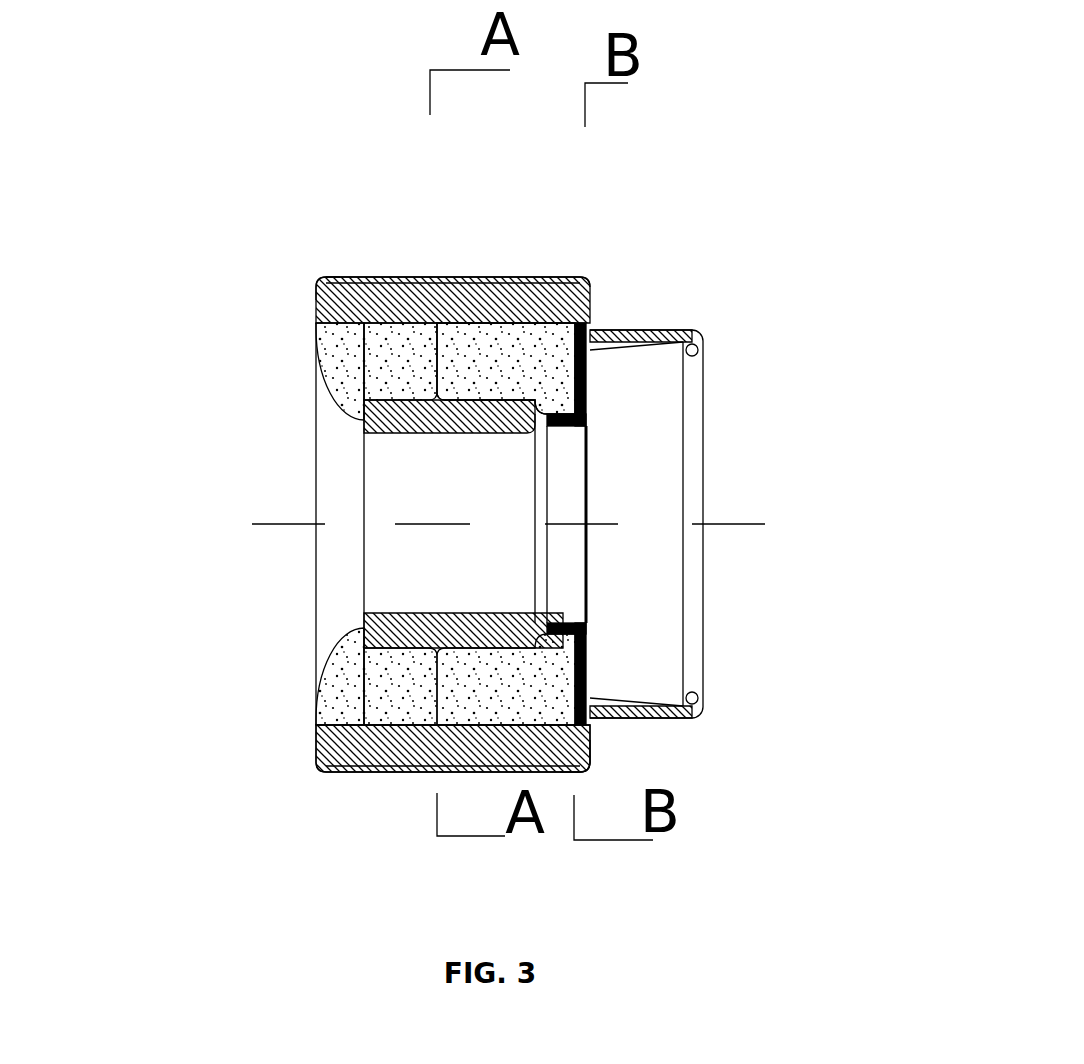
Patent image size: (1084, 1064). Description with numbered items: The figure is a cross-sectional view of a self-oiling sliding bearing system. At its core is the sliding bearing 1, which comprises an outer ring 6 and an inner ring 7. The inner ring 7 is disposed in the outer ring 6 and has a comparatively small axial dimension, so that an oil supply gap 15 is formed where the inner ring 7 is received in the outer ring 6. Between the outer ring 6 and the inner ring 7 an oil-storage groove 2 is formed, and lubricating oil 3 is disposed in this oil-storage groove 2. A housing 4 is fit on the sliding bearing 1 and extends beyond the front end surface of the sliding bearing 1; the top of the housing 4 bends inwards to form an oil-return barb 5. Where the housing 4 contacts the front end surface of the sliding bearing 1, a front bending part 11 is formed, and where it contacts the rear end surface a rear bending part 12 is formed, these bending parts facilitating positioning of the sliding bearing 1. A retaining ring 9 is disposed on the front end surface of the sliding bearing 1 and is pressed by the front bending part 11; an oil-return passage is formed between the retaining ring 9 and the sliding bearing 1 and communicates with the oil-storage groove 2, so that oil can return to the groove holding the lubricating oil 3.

The sliding bearing 1 is at (378, 300).
The oil-storage groove 2 is at (512, 370).
The lubricating oil 3 is at (551, 370).
The housing 4 is at (510, 278).
The oil-return barb 5 is at (688, 345).
The outer ring 6 is at (405, 752).
The inner ring 7 is at (440, 615).
The retaining ring 9 is at (590, 405).
The front bending part 11 is at (600, 740).
The rear bending part 12 is at (315, 303).
The oil supply gap 15 is at (345, 632).